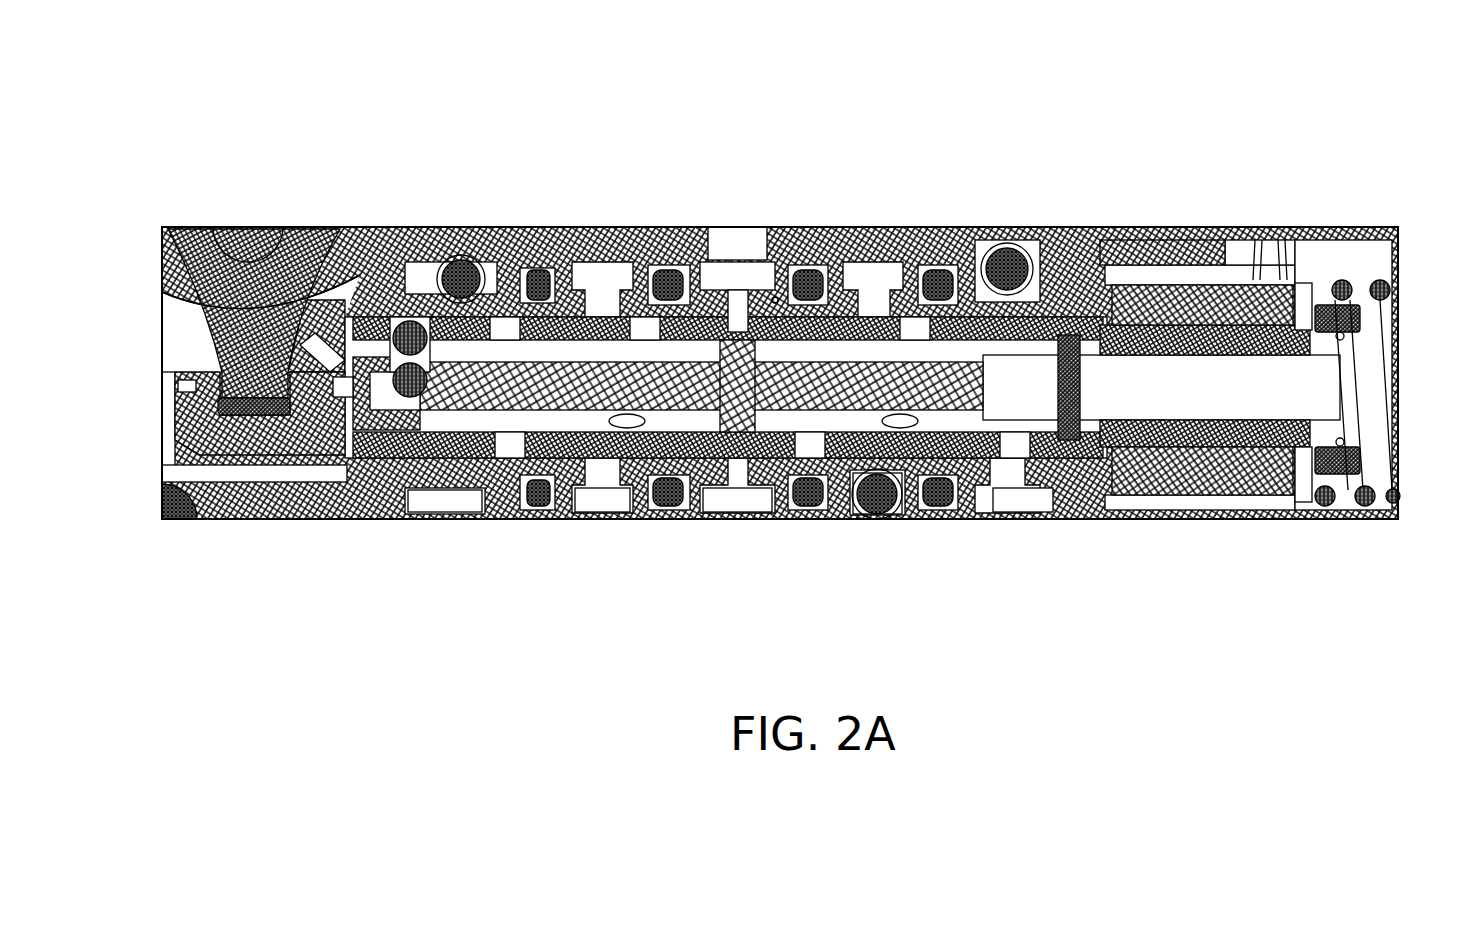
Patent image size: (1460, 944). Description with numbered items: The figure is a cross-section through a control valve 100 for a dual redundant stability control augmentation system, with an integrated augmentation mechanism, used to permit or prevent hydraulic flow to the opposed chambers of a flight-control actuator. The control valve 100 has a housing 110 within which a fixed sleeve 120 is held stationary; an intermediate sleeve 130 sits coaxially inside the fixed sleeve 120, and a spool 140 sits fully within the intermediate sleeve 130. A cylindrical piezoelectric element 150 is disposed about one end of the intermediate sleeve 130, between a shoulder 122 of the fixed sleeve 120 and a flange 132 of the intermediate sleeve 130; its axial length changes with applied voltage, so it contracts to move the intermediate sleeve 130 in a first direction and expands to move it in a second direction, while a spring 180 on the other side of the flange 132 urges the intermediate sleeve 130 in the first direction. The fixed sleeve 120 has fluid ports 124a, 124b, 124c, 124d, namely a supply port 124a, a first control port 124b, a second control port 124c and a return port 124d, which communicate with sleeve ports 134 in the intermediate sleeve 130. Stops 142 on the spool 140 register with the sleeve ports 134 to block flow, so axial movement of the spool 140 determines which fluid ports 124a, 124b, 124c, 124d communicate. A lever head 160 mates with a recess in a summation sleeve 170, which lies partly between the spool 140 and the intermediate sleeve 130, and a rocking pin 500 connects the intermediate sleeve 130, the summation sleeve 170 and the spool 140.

The control valve 100 is at (292, 160).
The housing 110 is at (1058, 245).
The fixed sleeve 120 is at (738, 260).
The shoulder 122 is at (1135, 522).
The supply port 124a is at (712, 512).
The first control port 124b is at (895, 475).
The second control port 124c is at (580, 512).
The return port 124d is at (452, 512).
The intermediate sleeve 130 is at (610, 322).
The flange 132 is at (1330, 498).
The sleeve ports 134 is at (476, 262).
The spool 140 is at (875, 380).
The stops 142 is at (506, 440).
The piezoelectric element 150 is at (1192, 290).
The lever head 160 is at (296, 470).
The summation sleeve 170 is at (215, 360).
The spring 180 is at (1385, 283).
The rocking pin 500 is at (410, 320).